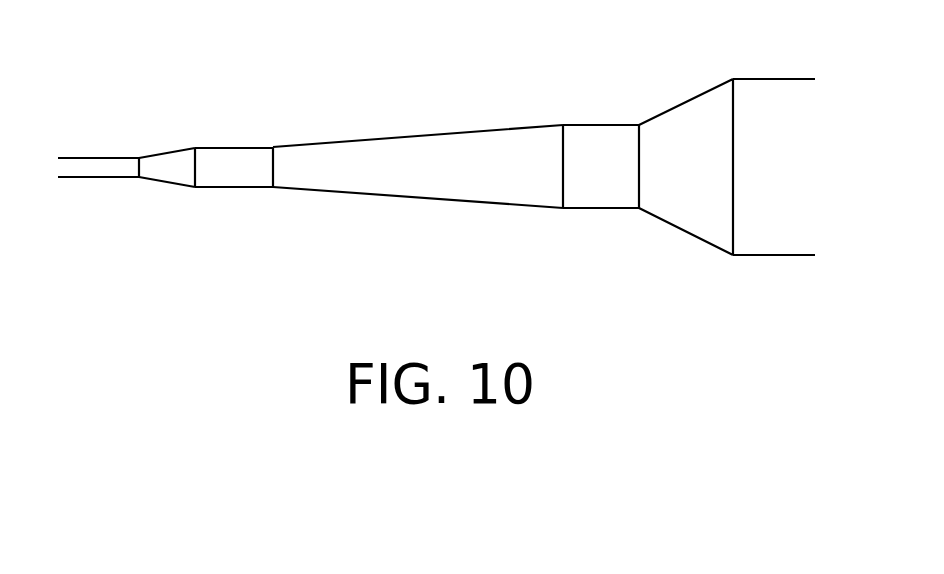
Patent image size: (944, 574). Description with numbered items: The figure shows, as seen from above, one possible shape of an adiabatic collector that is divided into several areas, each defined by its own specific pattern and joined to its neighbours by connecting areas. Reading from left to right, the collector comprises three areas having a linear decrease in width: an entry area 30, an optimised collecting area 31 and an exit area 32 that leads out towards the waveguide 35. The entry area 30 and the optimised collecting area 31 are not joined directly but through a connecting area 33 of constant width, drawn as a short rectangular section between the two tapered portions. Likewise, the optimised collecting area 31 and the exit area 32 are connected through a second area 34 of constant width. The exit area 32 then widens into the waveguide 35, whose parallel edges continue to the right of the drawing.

The entry area 30 is at (173, 165).
The optimised collecting area 31 is at (432, 152).
The exit area 32 is at (697, 123).
The constant-width connecting area 33 is at (253, 160).
The constant-width connecting area 34 is at (610, 138).
The waveguide 35 is at (773, 95).